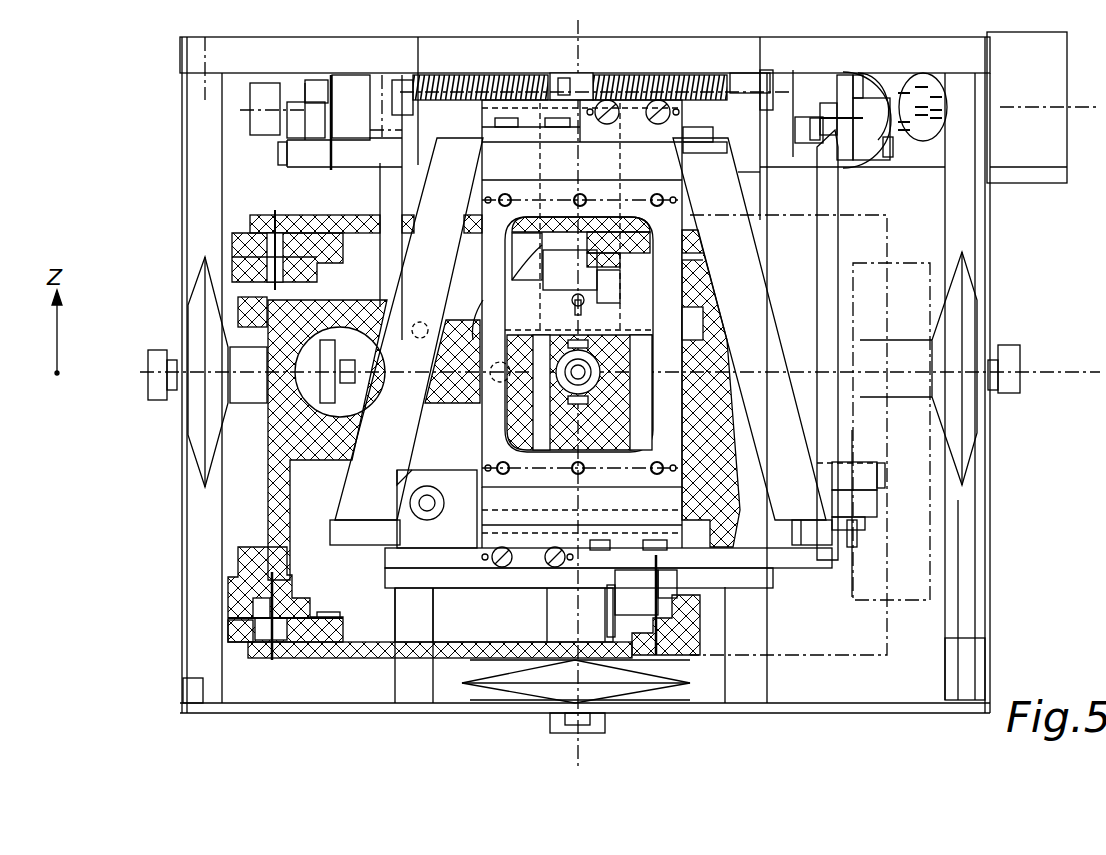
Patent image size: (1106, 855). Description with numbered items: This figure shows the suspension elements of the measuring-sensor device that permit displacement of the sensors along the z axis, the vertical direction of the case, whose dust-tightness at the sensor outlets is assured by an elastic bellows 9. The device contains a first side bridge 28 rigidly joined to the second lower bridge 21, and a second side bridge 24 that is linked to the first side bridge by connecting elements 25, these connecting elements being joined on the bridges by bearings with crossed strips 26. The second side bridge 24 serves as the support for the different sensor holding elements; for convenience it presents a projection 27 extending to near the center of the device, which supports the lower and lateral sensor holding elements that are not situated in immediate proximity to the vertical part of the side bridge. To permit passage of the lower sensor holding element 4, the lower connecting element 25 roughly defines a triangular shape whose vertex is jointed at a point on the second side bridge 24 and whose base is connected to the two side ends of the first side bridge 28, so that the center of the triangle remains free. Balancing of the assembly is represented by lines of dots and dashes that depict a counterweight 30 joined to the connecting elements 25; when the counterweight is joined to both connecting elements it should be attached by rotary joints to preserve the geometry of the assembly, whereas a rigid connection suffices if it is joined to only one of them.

The lower sensor holding element 4 is at (560, 610).
The elastic bellows 9 is at (201, 425).
The second lower bridge 21 is at (700, 540).
The second side bridge 24 is at (263, 500).
The connecting elements 25 is at (345, 215).
The bearings with crossed strips 26 is at (230, 290).
The projection 27 is at (455, 327).
The first side bridge 28 is at (730, 340).
The counterweight 30 is at (907, 540).